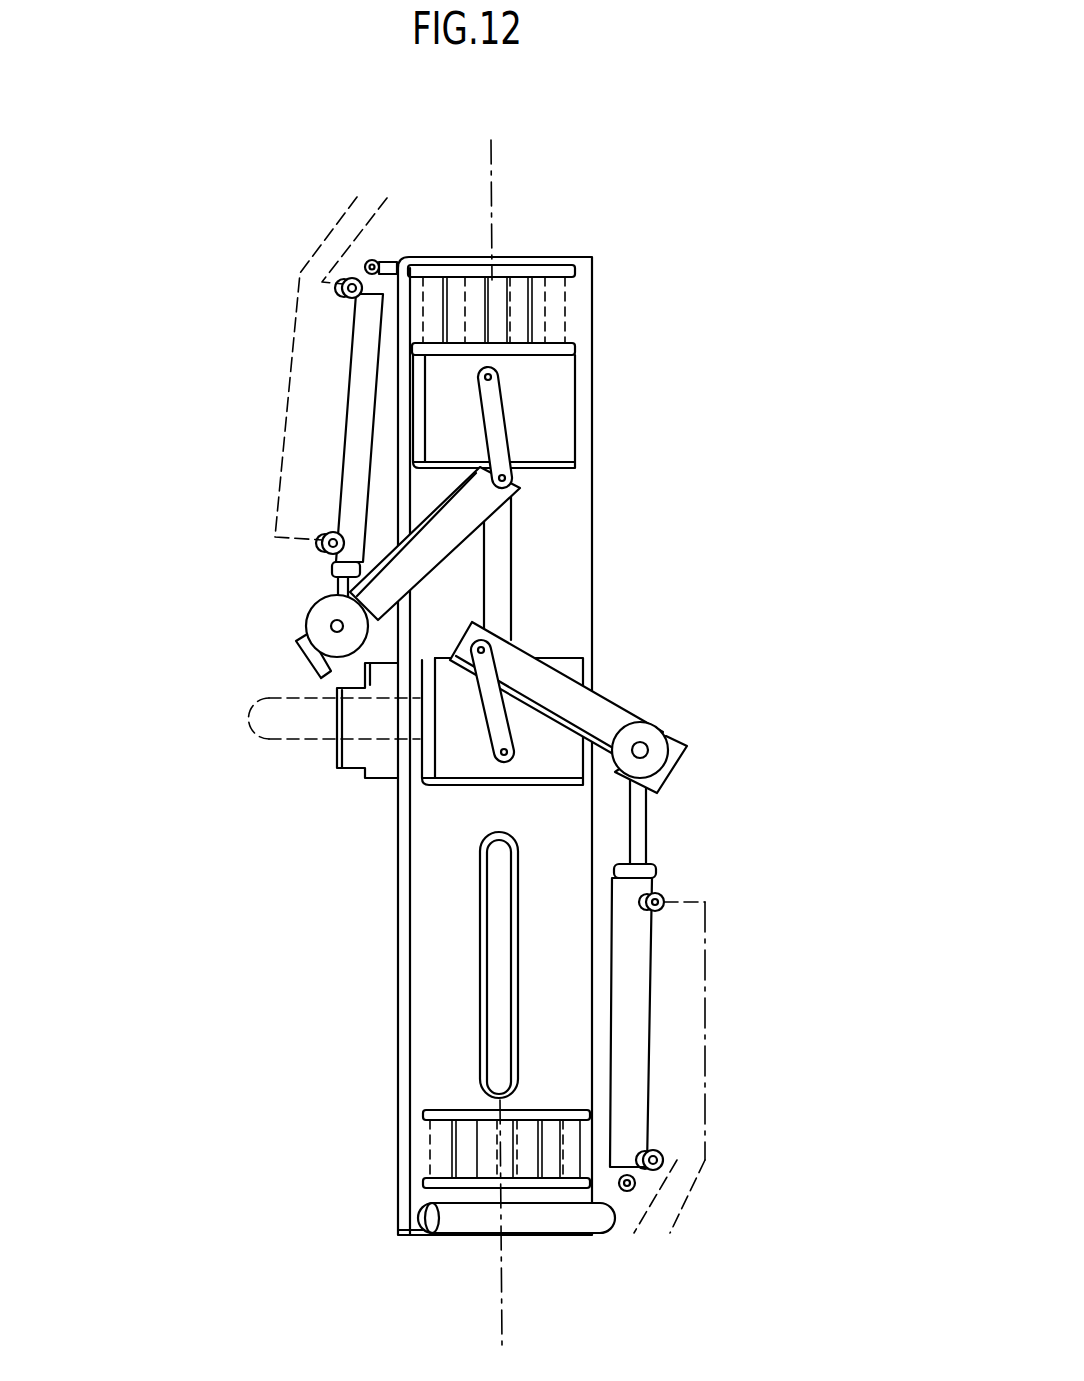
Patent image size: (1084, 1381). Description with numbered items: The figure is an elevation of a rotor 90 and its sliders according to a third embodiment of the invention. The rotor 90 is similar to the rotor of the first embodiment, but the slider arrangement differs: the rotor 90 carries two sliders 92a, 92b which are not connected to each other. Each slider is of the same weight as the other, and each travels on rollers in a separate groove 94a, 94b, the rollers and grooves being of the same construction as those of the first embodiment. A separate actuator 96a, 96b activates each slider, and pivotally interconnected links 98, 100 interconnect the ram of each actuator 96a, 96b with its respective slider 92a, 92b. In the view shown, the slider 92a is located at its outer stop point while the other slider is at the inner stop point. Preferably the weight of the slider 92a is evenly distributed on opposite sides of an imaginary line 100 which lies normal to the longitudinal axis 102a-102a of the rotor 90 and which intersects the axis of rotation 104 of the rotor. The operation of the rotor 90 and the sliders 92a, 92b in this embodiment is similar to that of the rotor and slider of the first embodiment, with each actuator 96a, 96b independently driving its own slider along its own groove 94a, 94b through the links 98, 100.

The rotor 90 is at (592, 578).
The slider 92a is at (573, 412).
The slider 92b is at (443, 786).
The groove 94a is at (512, 597).
The groove 94b is at (488, 834).
The actuator 96a is at (357, 365).
The actuator 96b is at (633, 998).
The link 98 is at (583, 698).
The link 100 is at (852, 719).
The longitudinal axis 102a is at (493, 192).
The axis of rotation 104 is at (473, 697).